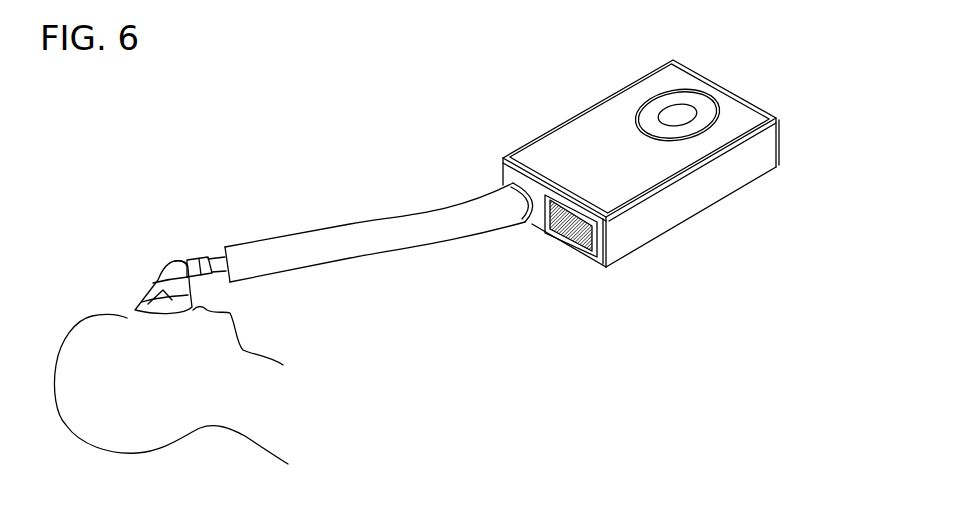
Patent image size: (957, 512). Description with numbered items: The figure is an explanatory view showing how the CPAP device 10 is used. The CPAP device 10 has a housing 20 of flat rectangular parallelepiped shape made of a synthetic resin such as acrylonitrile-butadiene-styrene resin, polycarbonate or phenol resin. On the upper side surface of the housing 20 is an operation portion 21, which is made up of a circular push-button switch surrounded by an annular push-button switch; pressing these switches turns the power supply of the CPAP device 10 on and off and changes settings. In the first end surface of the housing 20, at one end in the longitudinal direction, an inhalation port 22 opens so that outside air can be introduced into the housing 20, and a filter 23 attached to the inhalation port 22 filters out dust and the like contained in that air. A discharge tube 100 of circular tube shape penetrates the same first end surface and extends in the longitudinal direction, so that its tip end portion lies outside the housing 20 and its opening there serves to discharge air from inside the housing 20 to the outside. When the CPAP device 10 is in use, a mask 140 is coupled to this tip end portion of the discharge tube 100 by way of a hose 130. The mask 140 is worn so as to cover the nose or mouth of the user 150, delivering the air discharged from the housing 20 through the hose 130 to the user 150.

The CPAP device 10 is at (637, 172).
The housing 20 is at (715, 88).
The operation portion 21 is at (647, 147).
The inhalation port 22 is at (570, 251).
The filter 23 is at (550, 233).
The discharge tube 100 is at (560, 164).
The hose 130 is at (358, 221).
The mask 140 is at (145, 288).
The user 150 is at (78, 328).